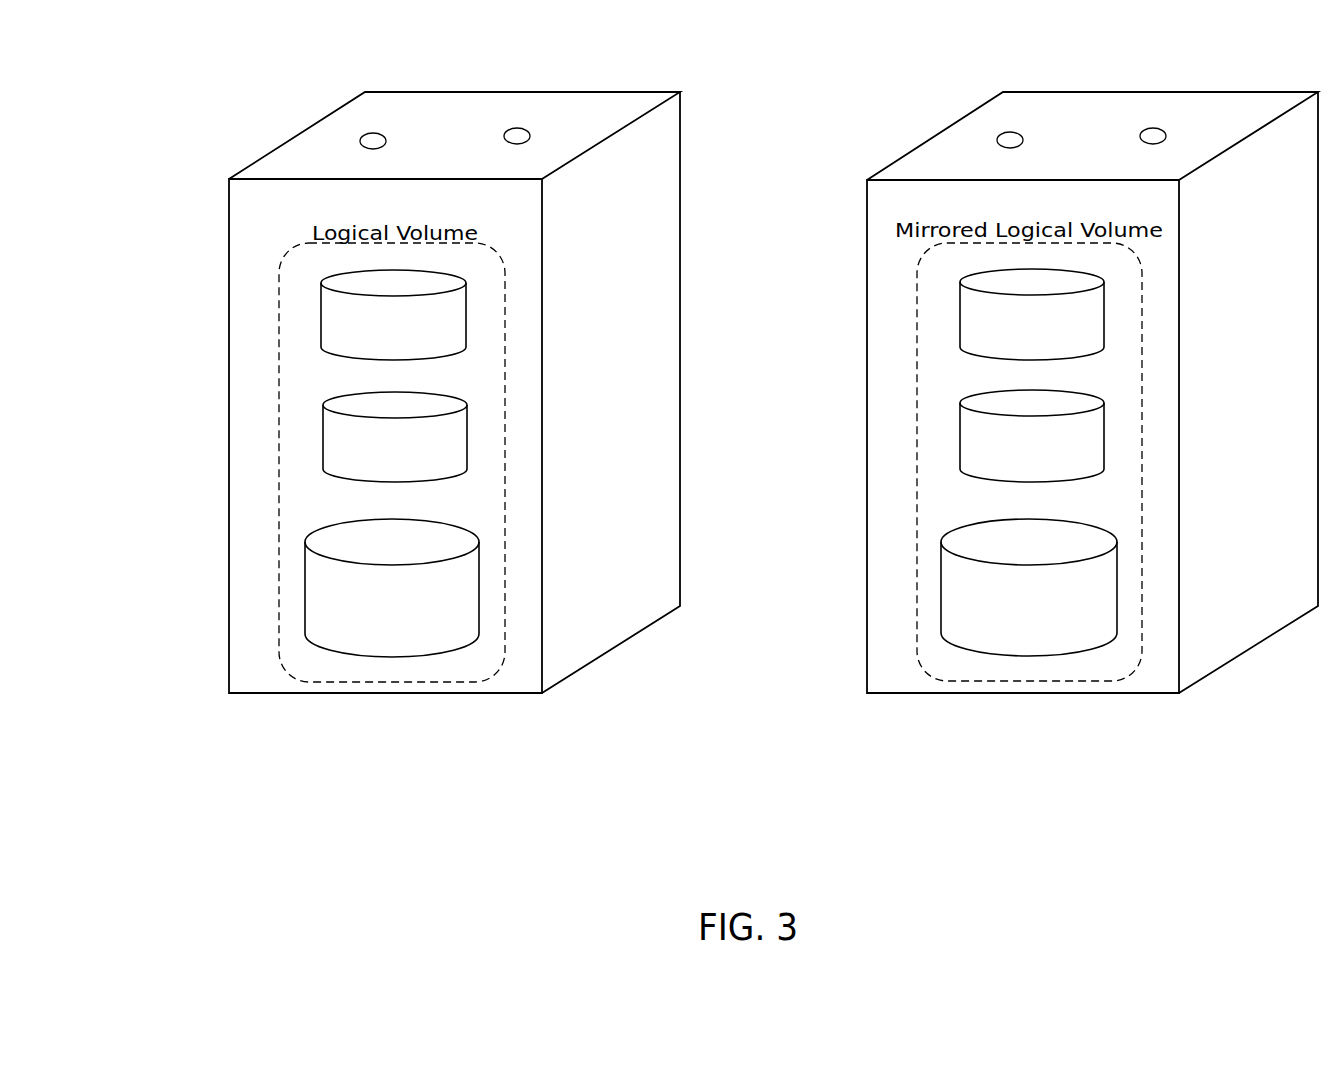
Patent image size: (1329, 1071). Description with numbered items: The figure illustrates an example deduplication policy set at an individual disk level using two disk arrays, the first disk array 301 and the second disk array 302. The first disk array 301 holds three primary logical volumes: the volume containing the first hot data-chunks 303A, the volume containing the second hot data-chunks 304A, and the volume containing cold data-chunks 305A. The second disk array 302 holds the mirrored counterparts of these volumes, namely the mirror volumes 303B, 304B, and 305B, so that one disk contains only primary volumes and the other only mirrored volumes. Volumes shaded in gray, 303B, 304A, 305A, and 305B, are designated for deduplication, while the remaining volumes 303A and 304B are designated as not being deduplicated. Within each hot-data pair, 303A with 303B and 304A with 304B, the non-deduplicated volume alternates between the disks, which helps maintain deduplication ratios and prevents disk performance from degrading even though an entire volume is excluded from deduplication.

The Disk Array 1 301 is at (427, 92).
The Disk Array 2 302 is at (1088, 92).
The logical volume containing hot data-chunks 1 303A is at (321, 323).
The logical volume containing hot data-chunks 2 304A is at (321, 440).
The logical volume containing cold data-chunks 305A is at (305, 585).
The mirrored logical volume containing hot data-chunks 1 303B is at (960, 312).
The mirrored logical volume containing hot data-chunks 2 304B is at (960, 435).
The mirrored logical volume containing cold data-chunks 305B is at (941, 583).